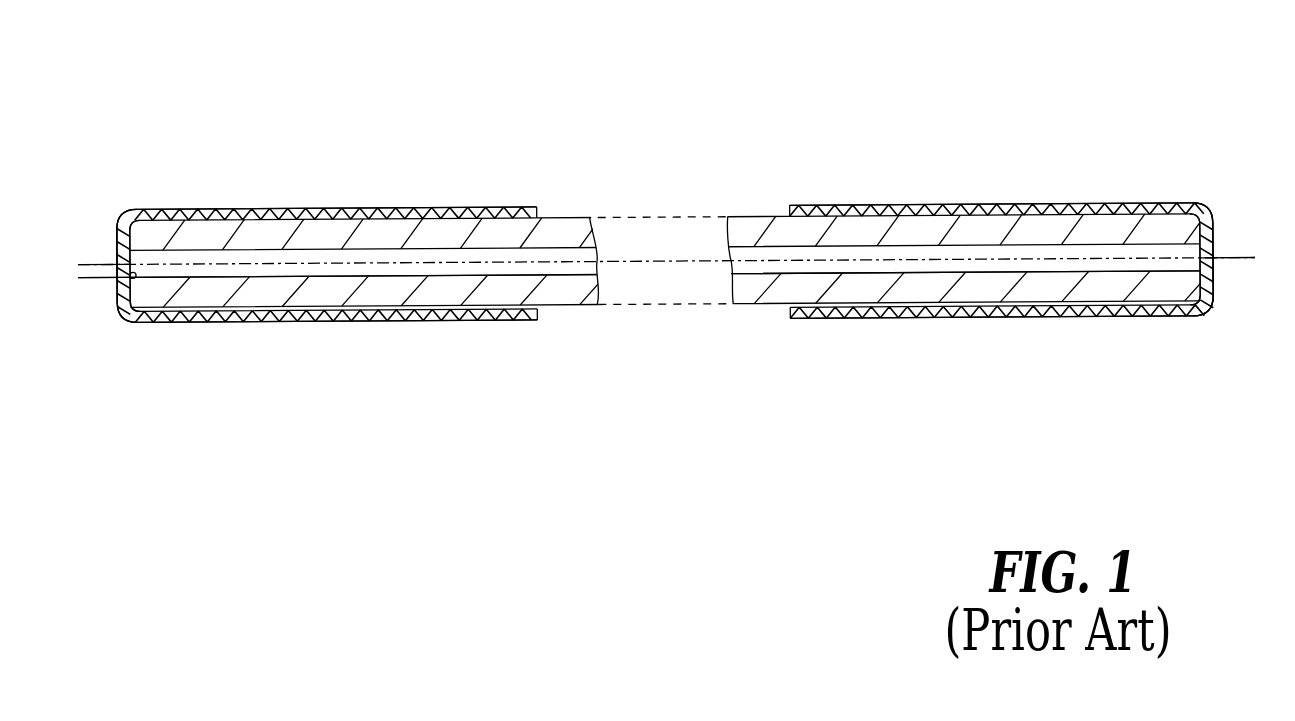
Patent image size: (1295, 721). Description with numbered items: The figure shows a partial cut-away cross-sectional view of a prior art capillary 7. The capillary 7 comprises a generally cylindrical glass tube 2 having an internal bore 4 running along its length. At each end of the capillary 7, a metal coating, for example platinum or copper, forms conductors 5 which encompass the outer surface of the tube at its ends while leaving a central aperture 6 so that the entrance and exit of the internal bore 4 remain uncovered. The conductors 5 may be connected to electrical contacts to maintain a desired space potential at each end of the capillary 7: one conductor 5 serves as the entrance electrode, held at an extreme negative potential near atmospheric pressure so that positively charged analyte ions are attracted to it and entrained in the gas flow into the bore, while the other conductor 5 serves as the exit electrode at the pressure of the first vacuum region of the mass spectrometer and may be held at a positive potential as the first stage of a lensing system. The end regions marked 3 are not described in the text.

The glass tube 2 is at (563, 216).
The center conductor end 3 is at (118, 279).
The internal bore 4 is at (562, 276).
The conductors 5 is at (320, 207).
The central aperture 6 is at (103, 256).
The capillary 7 is at (905, 80).